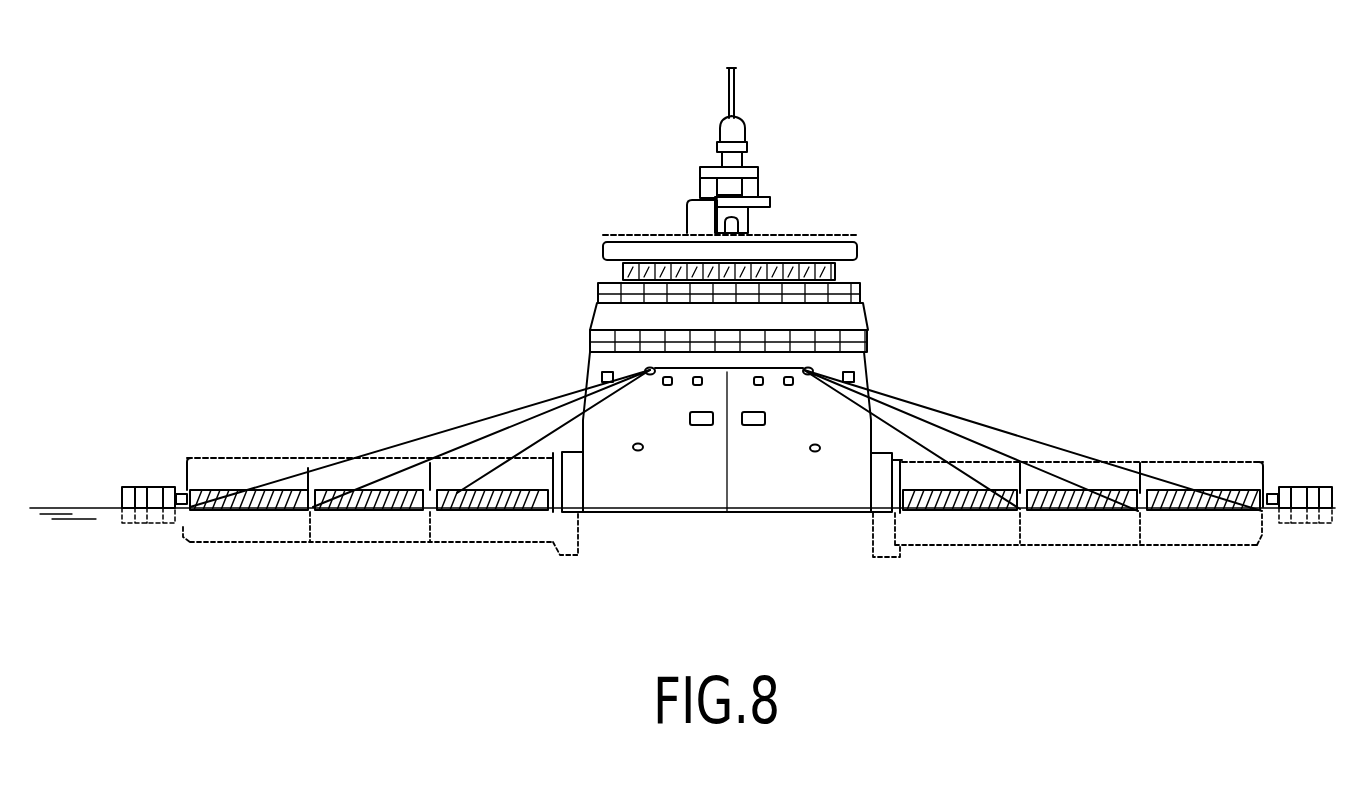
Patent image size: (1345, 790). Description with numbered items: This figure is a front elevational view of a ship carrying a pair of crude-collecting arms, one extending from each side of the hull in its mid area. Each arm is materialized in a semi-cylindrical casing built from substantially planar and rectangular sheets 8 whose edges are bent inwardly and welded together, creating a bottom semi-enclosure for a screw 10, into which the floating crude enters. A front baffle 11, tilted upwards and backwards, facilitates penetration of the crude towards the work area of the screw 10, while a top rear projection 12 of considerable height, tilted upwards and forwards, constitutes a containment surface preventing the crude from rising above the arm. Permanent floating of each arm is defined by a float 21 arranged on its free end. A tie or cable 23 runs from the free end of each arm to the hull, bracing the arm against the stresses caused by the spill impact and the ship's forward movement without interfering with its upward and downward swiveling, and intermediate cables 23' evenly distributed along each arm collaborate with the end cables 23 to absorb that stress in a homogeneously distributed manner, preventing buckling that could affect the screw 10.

The sheets 8 is at (373, 530).
The screw 10 is at (280, 507).
The front baffle 11 is at (232, 530).
The top rear projection 12 is at (230, 455).
The float 21 is at (135, 487).
The cable 23 is at (726, 413).
The intermediate cables 23' is at (725, 413).